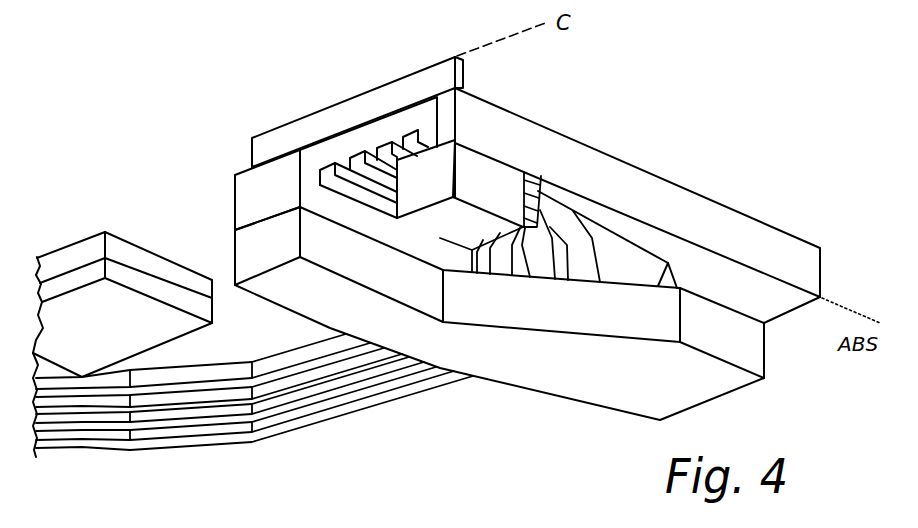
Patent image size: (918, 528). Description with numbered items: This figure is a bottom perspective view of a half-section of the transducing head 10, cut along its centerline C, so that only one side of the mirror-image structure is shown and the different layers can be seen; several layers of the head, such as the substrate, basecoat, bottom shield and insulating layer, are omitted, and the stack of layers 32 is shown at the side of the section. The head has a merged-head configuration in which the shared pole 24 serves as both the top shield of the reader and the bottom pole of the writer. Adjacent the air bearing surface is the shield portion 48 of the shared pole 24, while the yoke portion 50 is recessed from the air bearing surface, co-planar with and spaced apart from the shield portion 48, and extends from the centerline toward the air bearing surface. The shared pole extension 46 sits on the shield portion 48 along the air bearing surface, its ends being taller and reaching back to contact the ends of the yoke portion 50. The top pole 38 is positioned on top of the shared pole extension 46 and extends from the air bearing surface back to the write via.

The transducing head 10 is at (145, 131).
The shared pole 24 is at (257, 195).
The layers 32 is at (180, 388).
The top pole 38 is at (352, 117).
The shared pole extension 46 is at (662, 200).
The shield portion 48 is at (537, 222).
The yoke portion 50 is at (233, 233).